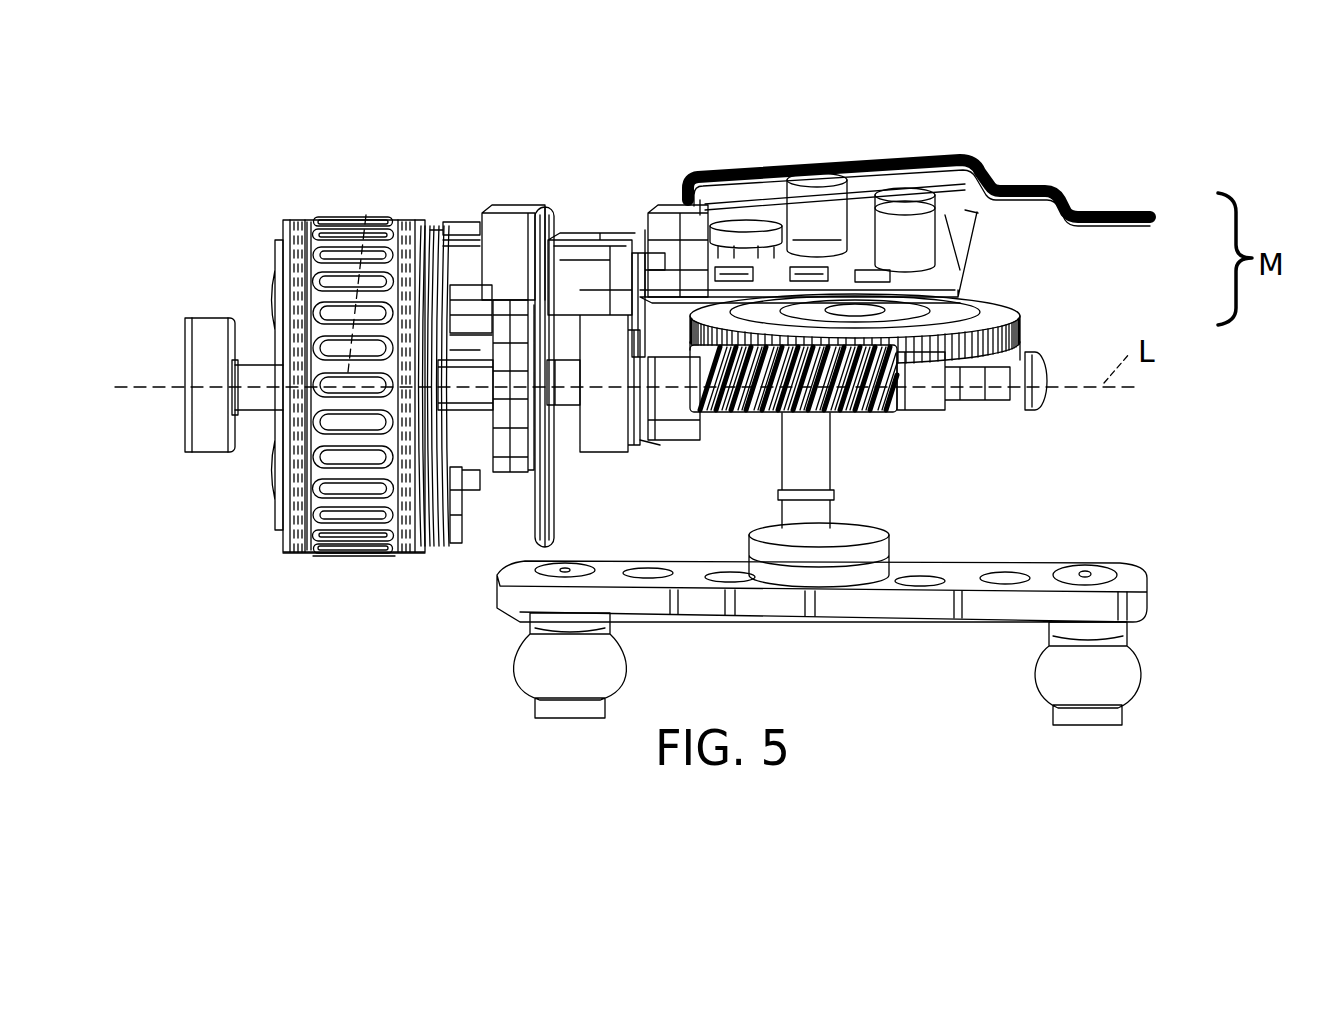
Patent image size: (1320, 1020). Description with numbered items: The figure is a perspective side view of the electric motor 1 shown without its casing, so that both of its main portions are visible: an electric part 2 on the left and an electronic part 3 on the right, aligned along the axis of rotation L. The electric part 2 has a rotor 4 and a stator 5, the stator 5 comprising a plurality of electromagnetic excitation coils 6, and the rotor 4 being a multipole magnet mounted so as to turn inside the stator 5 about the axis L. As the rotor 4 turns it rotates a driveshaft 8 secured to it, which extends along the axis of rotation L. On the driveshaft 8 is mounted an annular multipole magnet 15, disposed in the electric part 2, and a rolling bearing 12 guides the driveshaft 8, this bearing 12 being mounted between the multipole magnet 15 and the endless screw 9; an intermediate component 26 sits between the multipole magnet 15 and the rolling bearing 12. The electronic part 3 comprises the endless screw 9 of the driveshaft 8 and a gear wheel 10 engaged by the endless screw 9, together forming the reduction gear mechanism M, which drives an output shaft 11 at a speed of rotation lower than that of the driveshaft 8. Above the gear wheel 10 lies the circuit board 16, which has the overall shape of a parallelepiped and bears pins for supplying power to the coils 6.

The motor 1 is at (306, 214).
The electric part 2 is at (309, 564).
The electronic part 3 is at (1066, 400).
The rotor 4 is at (366, 215).
The stator 5 is at (316, 287).
The electromagnetic excitation coils 6 is at (276, 305).
The driveshaft 8 is at (566, 402).
The endless screw 9 is at (1020, 345).
The gear wheel 10 is at (1020, 316).
The output shaft 11 is at (850, 450).
The rolling bearing 12 is at (610, 410).
The multipole magnet 15 is at (503, 472).
The circuit board 16 is at (965, 215).
The intermediate component 26 is at (540, 500).